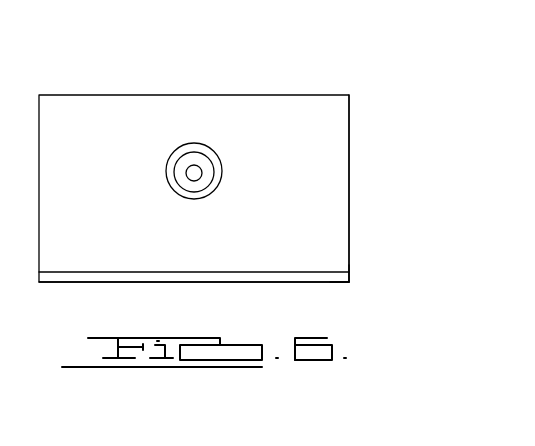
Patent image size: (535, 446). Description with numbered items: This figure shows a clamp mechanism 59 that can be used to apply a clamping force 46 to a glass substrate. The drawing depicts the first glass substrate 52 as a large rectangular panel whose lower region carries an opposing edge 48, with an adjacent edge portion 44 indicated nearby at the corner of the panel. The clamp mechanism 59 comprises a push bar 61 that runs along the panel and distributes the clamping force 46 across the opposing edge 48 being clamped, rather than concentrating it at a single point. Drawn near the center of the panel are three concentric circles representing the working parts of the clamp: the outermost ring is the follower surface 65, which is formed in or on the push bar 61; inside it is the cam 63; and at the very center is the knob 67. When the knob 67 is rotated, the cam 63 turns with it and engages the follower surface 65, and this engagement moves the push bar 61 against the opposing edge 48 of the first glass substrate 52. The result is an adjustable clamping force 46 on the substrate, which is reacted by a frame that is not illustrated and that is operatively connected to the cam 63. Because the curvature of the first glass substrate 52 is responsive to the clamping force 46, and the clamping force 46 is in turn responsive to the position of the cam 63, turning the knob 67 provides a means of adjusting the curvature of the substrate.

The clamp mechanism 59 is at (320, 84).
The push bar 61 is at (350, 190).
The clamping force 46 is at (100, 272).
The edge portion 44 is at (351, 273).
The opposing edge 48 is at (356, 283).
The first glass substrate 52 is at (322, 284).
The follower surface 65 is at (181, 192).
The cam 63 is at (197, 187).
The knob 67 is at (194, 173).